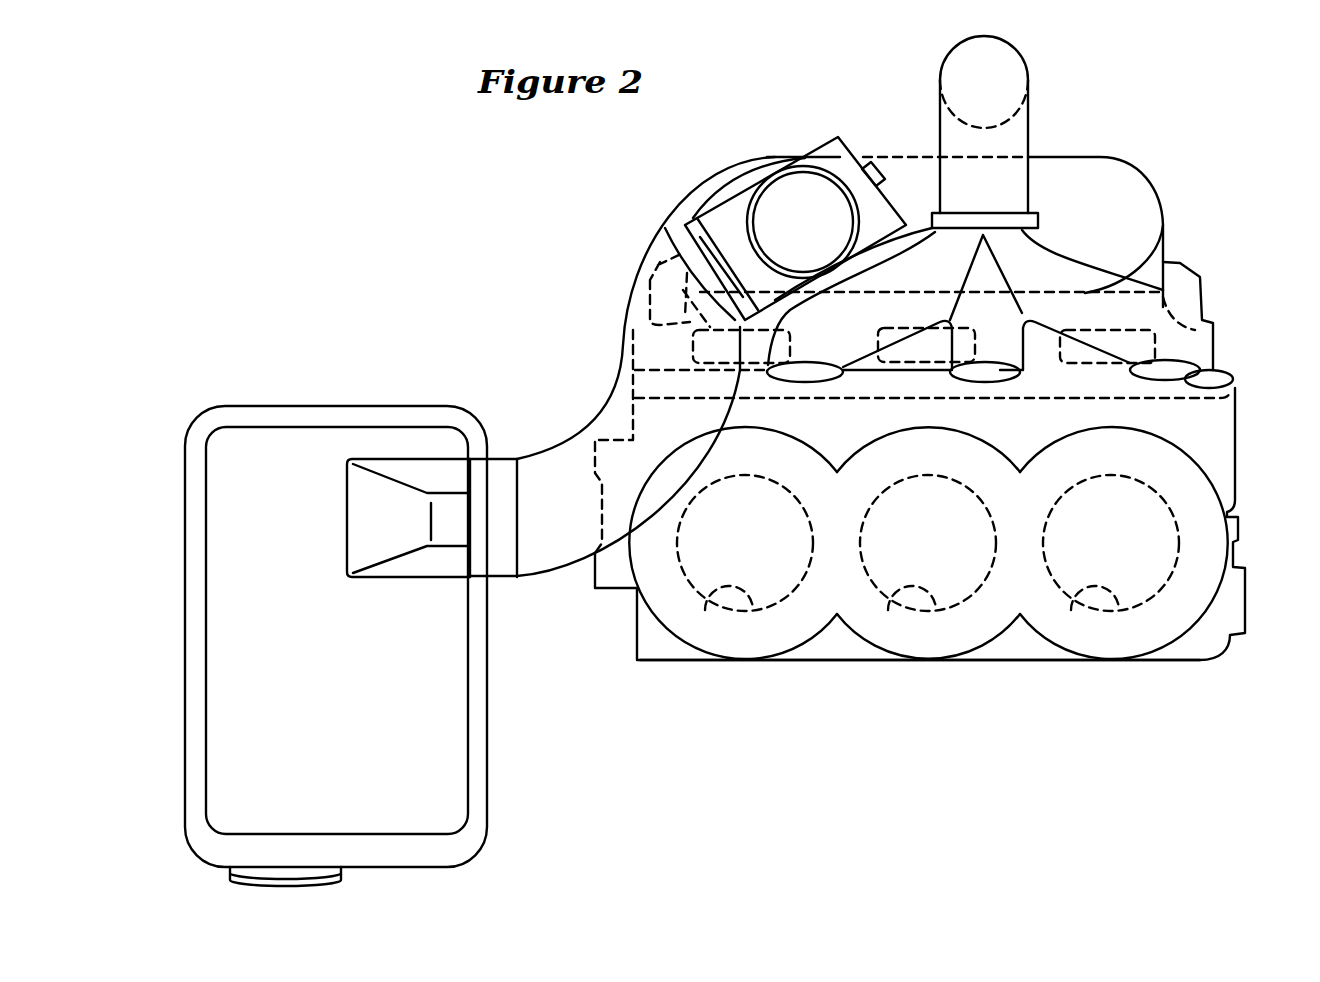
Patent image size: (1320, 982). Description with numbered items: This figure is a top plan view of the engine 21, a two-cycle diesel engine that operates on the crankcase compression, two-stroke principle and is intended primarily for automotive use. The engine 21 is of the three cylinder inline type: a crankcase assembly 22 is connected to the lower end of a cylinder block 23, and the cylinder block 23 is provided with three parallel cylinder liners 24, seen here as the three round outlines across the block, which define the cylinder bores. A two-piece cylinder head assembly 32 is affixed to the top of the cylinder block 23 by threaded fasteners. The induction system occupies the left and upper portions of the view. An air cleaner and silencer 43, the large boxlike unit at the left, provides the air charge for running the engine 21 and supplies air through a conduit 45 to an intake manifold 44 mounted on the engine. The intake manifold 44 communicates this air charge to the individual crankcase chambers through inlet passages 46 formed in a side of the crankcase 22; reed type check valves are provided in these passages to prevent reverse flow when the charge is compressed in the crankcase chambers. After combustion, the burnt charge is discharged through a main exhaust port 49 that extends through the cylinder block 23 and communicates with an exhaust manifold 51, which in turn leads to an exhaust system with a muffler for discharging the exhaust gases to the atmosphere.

The engine 21 is at (1193, 258).
The crankcase assembly 22 is at (1215, 352).
The cylinder block 23 is at (1233, 482).
The cylinder liners 24 is at (708, 597).
The cylinder head assembly 32 is at (938, 638).
The air cleaner and silencer 43 is at (213, 520).
The intake manifold 44 is at (1053, 173).
The conduit 45 is at (640, 318).
The inlet passages 46 is at (745, 357).
The main exhaust port 49 is at (817, 380).
The exhaust manifold 51 is at (1073, 280).